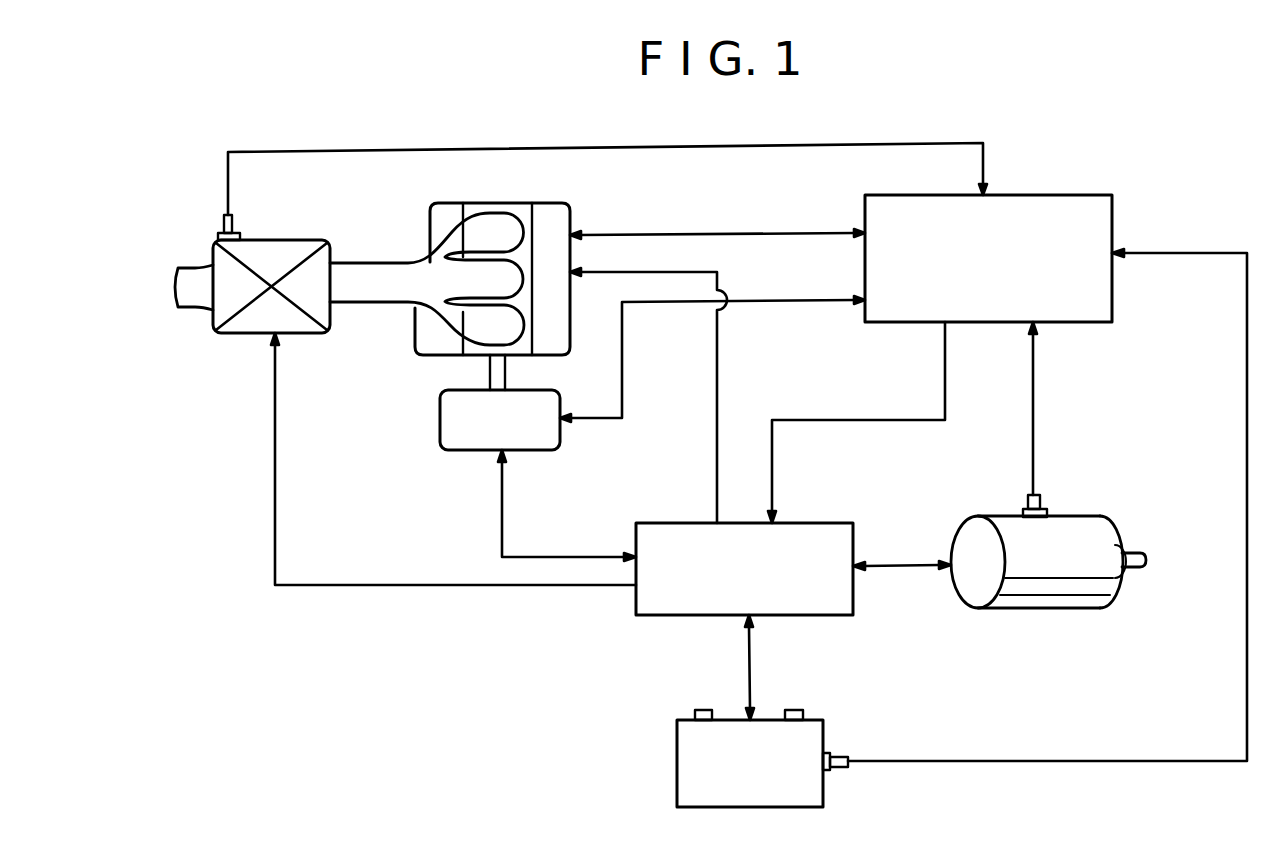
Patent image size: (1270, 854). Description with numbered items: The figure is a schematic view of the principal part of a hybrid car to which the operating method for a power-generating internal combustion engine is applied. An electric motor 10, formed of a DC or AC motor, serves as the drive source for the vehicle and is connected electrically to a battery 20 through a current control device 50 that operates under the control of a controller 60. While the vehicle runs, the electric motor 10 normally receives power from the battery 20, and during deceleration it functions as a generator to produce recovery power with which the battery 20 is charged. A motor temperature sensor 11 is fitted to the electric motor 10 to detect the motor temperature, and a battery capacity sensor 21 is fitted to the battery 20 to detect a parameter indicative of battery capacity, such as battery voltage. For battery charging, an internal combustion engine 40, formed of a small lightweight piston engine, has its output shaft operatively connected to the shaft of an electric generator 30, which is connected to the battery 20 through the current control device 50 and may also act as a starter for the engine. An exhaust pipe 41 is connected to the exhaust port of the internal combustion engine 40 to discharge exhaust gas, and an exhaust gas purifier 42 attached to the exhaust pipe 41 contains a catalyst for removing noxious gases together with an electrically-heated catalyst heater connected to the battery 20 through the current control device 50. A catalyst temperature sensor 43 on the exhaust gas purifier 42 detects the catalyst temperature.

The electric motor 10 is at (1088, 525).
The motor temperature sensor 11 is at (1042, 500).
The battery 20 is at (808, 725).
The battery capacity sensor 21 is at (835, 753).
The electric generator 30 is at (542, 446).
The internal combustion engine 40 is at (505, 220).
The exhaust pipe 41 is at (372, 268).
The exhaust gas purifier 42 is at (273, 247).
The catalyst temperature sensor 43 is at (222, 218).
The current control device 50 is at (820, 530).
The controller 60 is at (1083, 200).